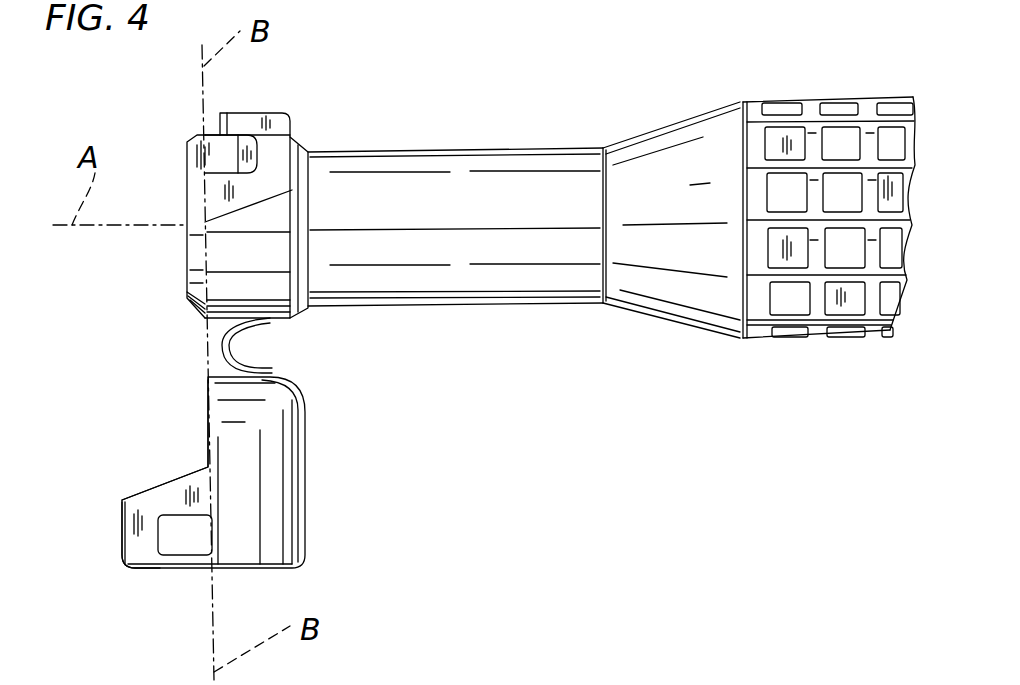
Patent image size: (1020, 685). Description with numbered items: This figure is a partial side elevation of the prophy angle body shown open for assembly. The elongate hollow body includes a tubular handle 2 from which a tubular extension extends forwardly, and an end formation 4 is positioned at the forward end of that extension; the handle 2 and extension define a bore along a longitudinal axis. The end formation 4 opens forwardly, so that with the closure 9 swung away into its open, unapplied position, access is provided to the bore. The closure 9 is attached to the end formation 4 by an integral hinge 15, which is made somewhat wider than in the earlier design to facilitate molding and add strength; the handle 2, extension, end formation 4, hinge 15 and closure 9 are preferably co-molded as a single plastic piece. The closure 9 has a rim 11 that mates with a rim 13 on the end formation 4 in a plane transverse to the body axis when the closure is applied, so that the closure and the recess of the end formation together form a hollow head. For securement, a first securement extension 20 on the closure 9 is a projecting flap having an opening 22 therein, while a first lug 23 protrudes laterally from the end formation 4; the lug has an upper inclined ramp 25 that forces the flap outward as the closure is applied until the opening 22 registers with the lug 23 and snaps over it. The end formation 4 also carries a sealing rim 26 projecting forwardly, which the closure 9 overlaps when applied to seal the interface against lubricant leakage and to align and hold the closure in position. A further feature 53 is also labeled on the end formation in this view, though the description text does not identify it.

The tubular handle 2 is at (795, 340).
The end formation 4 is at (267, 293).
The closure 9 is at (333, 537).
The rim 11 is at (206, 430).
The rim 13 is at (207, 253).
The integral hinge 15 is at (230, 347).
The first securement extension 20 is at (130, 566).
The opening 22 is at (187, 553).
The first lug 23 is at (250, 148).
The ramp 25 is at (223, 153).
The sealing rim 26 is at (190, 285).
The protrusion 53 is at (235, 113).